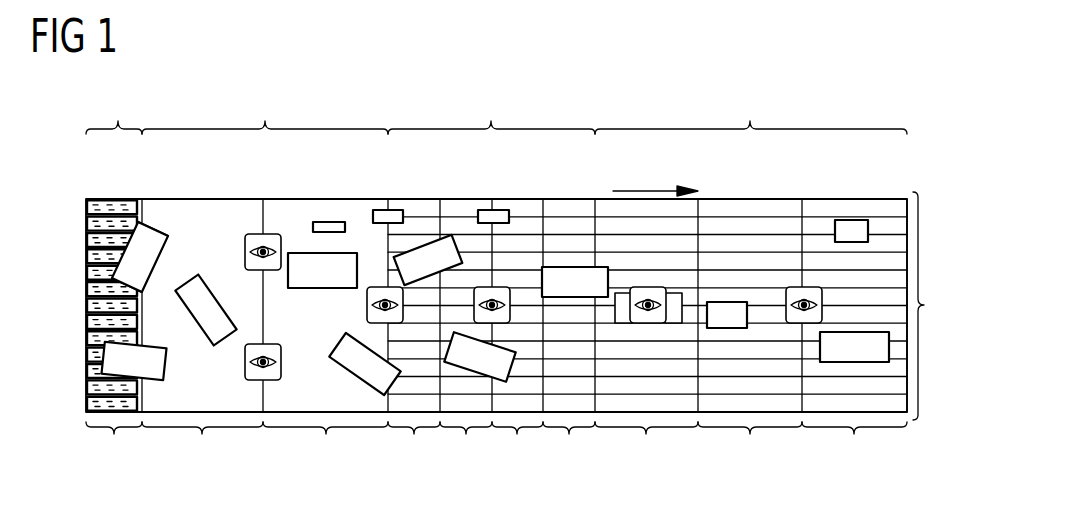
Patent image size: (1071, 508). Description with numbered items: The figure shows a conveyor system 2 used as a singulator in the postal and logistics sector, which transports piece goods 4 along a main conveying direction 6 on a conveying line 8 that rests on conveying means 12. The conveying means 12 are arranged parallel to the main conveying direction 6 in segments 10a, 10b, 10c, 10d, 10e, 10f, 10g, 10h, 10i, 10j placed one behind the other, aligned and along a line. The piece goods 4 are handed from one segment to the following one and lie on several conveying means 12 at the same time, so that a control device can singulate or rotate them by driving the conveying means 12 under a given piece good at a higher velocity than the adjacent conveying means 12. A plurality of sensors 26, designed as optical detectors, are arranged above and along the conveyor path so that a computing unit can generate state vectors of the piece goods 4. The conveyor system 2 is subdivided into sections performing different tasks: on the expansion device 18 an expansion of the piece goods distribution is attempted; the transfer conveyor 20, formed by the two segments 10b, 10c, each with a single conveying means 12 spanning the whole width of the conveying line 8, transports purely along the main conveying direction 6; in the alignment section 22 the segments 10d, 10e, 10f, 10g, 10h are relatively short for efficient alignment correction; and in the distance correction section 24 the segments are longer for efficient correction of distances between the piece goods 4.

The conveyor system 2 is at (882, 99).
The piece goods 4 is at (336, 222).
The main conveying direction 6 is at (657, 190).
The conveying line 8 is at (930, 306).
The segment 10a is at (114, 338).
The segment 10b is at (202, 338).
The segment 10c is at (325, 338).
The segment 10d is at (413, 338).
The segment 10e is at (466, 338).
The segment 10f is at (517, 338).
The segment 10g is at (568, 338).
The segment 10h is at (646, 338).
The segment 10i is at (750, 338).
The segment 10j is at (854, 338).
The conveying means 12 is at (86, 222).
The expansion device 18 is at (114, 110).
The transfer conveyor 20 is at (265, 110).
The alignment section 22 is at (491, 110).
The distance correction section 24 is at (751, 110).
The sensor 26 is at (255, 240).